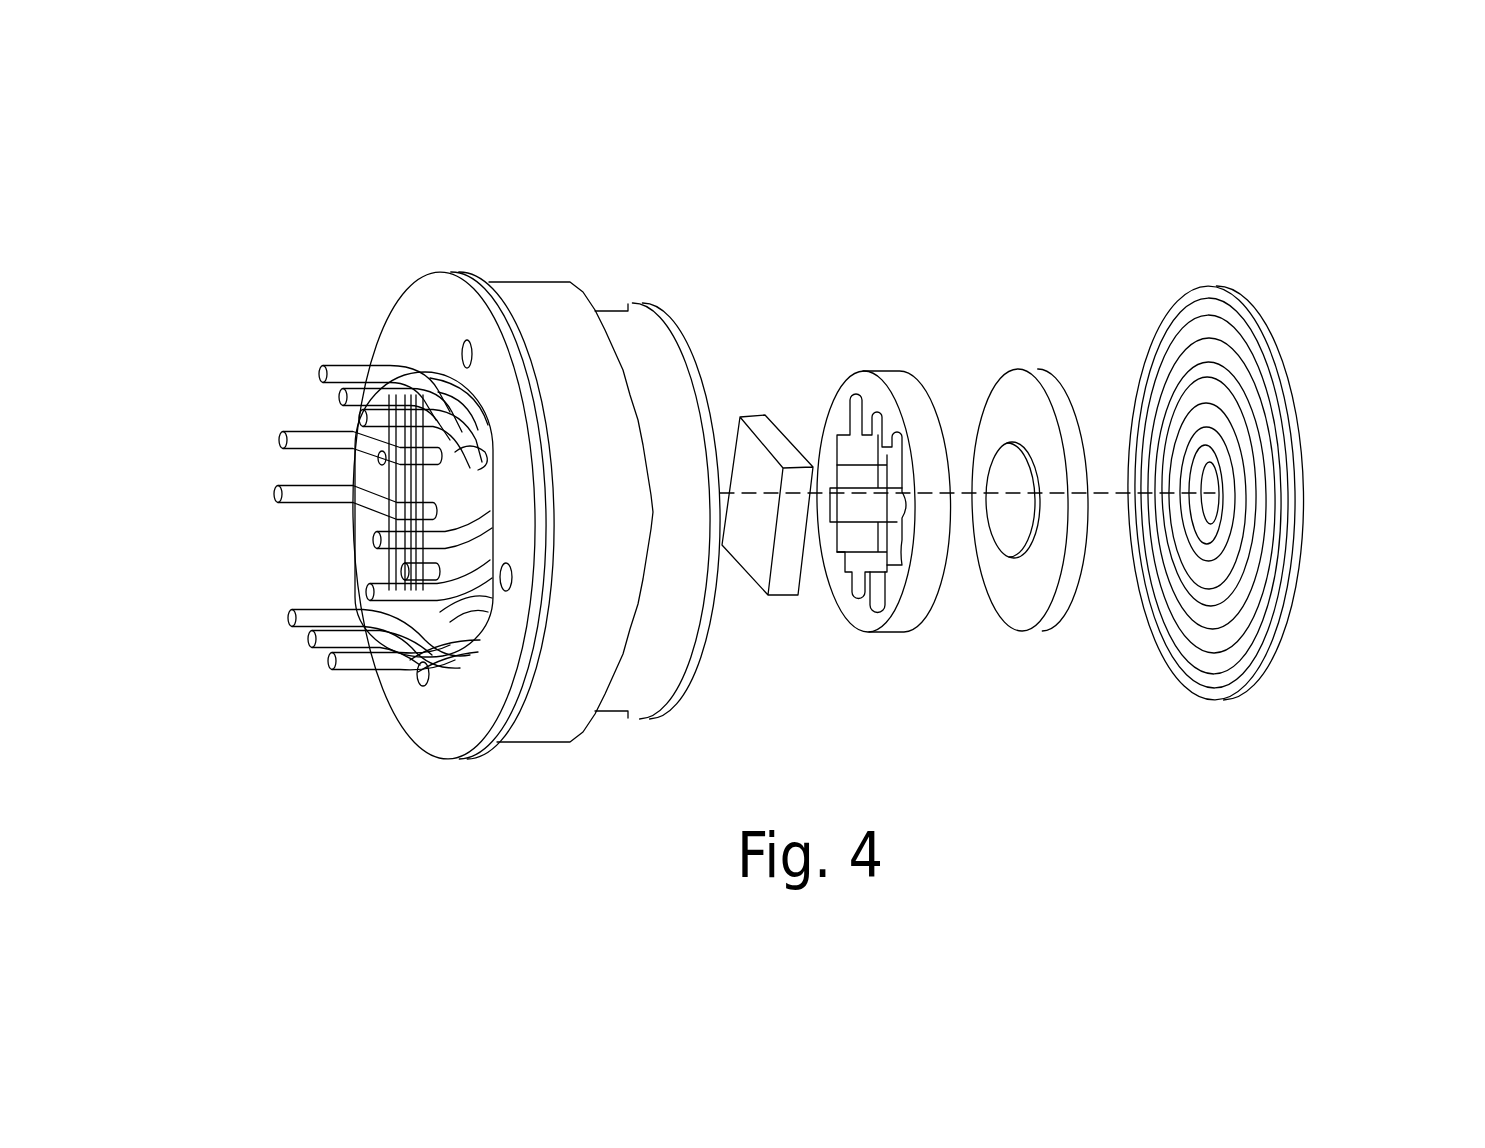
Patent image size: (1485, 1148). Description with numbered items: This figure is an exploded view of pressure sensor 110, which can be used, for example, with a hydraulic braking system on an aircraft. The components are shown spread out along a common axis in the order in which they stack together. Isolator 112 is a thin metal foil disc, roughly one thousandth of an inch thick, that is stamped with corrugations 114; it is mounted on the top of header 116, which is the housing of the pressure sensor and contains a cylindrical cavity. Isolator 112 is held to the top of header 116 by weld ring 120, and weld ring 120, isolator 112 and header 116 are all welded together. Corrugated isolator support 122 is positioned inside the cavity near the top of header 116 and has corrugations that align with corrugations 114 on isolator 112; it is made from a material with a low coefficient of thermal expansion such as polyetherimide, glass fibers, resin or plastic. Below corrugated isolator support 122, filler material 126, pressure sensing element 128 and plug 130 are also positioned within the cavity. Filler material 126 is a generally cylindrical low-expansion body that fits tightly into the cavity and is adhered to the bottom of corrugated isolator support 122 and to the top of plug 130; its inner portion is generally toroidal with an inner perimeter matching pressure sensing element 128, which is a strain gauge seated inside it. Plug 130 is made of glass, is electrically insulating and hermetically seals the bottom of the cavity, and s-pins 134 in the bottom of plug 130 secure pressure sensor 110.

The pressure sensor 110 is at (353, 208).
The isolator 112 is at (1248, 420).
The corrugations 114 is at (1225, 372).
The header 116 is at (547, 313).
The weld ring 120 is at (1172, 305).
The corrugated isolator support 122 is at (1012, 395).
The filler material 126 is at (900, 390).
The pressure sensing element 128 is at (757, 423).
The plug 130 is at (447, 485).
The s-pins 134 is at (302, 493).